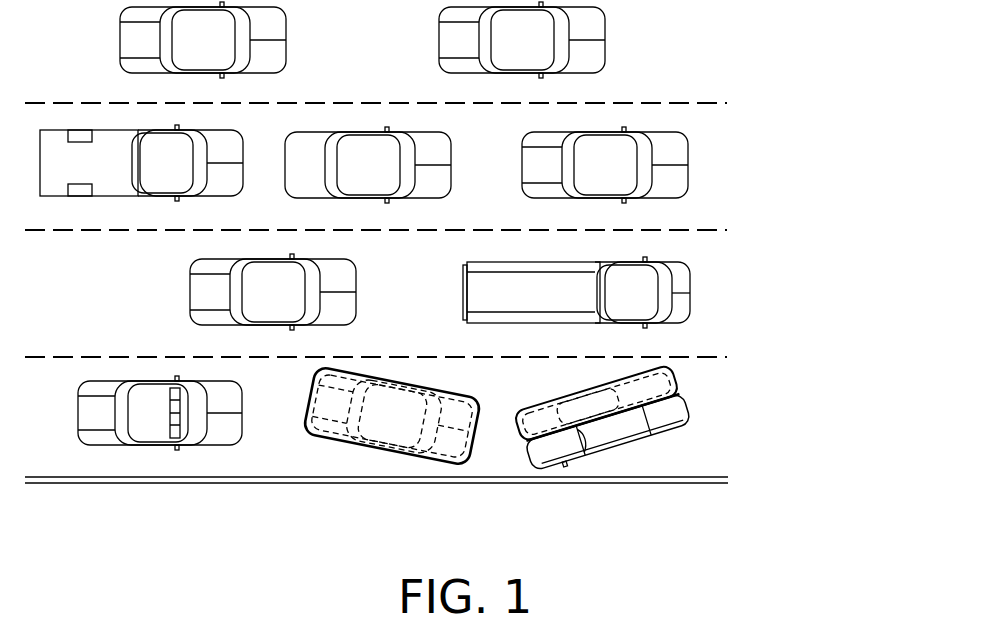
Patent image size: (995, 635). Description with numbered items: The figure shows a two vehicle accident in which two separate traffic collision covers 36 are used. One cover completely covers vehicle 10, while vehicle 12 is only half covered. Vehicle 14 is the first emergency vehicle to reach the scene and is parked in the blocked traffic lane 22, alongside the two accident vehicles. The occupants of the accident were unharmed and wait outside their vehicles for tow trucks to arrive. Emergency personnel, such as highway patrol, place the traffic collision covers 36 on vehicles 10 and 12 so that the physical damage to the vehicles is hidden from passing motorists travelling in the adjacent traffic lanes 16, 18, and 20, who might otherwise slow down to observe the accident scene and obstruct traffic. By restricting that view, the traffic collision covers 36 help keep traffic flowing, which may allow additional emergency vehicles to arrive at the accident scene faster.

The vehicle 10 is at (365, 449).
The vehicle 12 is at (613, 452).
The vehicle 14 is at (150, 447).
The traffic lane 16 is at (705, 48).
The traffic lane 18 is at (705, 171).
The traffic lane 20 is at (708, 305).
The traffic lane 22 is at (705, 426).
The traffic collision cover 36 is at (466, 468).